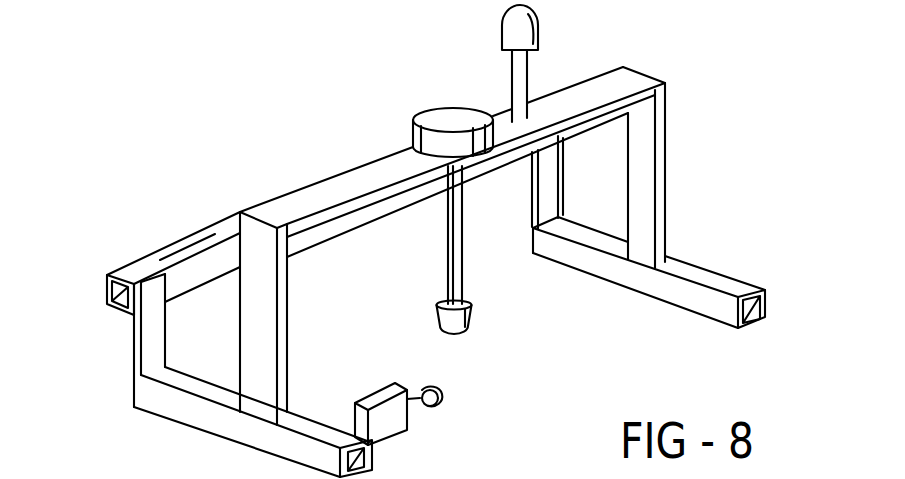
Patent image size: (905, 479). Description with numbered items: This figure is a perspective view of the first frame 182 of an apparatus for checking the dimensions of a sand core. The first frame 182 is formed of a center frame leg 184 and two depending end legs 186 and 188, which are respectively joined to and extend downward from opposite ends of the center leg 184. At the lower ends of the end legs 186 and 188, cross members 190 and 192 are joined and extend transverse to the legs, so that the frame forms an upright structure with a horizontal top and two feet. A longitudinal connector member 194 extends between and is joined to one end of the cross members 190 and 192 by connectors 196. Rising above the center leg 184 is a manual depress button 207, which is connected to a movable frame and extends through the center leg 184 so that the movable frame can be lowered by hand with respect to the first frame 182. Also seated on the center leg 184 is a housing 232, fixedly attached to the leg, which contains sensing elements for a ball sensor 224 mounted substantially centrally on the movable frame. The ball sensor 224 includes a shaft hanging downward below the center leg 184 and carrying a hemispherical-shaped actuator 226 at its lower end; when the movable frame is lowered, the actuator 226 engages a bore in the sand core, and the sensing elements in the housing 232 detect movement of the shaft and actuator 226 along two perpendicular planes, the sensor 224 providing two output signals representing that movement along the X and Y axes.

The first frame 182 is at (351, 94).
The center frame leg 184 is at (343, 178).
The end leg 186 is at (264, 314).
The end leg 188 is at (648, 128).
The cross member 190 is at (190, 413).
The cross member 192 is at (683, 268).
The longitudinal connector member 194 is at (197, 248).
The connectors 196 is at (157, 337).
The manual depress button 207 is at (527, 72).
The ball sensor 224 is at (450, 260).
The hemispherical-shaped actuator 226 is at (468, 322).
The housing 232 is at (474, 115).